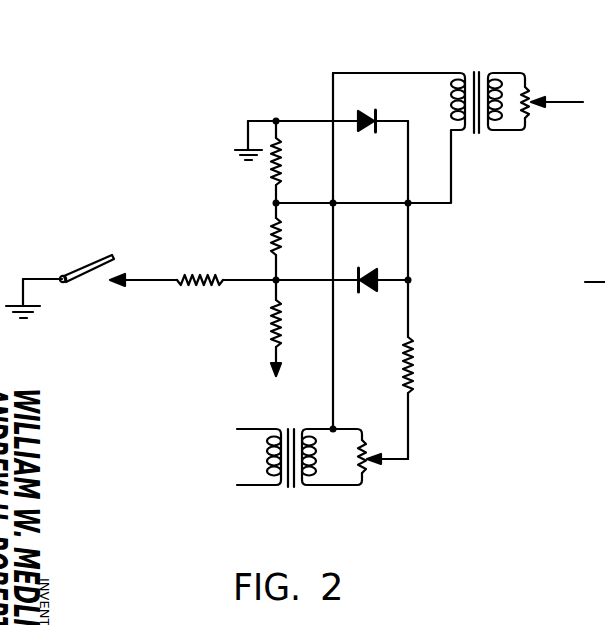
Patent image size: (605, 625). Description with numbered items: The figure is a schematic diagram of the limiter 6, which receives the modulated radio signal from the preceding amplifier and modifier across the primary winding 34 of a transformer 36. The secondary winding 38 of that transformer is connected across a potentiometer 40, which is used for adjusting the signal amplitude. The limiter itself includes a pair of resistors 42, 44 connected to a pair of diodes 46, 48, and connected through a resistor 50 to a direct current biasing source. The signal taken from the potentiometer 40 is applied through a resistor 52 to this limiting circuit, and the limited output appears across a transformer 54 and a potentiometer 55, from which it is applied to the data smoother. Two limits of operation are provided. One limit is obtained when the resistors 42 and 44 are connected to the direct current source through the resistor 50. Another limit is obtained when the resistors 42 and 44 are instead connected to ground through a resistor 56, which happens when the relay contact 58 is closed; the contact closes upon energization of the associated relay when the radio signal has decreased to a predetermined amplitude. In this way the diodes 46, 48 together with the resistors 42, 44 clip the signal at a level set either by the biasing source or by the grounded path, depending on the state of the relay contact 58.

The limiter 6 is at (253, 44).
The primary winding 34 is at (277, 478).
The transformer 36 is at (294, 489).
The secondary winding 38 is at (319, 466).
The potentiometer 40 is at (365, 470).
The resistor 42 is at (268, 163).
The resistor 44 is at (273, 233).
The diode 46 is at (371, 111).
The diode 48 is at (371, 268).
The resistor 50 is at (270, 328).
The resistor 52 is at (415, 366).
The transformer 54 is at (485, 56).
The potentiometer 55 is at (536, 99).
The resistor 56 is at (195, 275).
The relay contact 58 is at (85, 265).